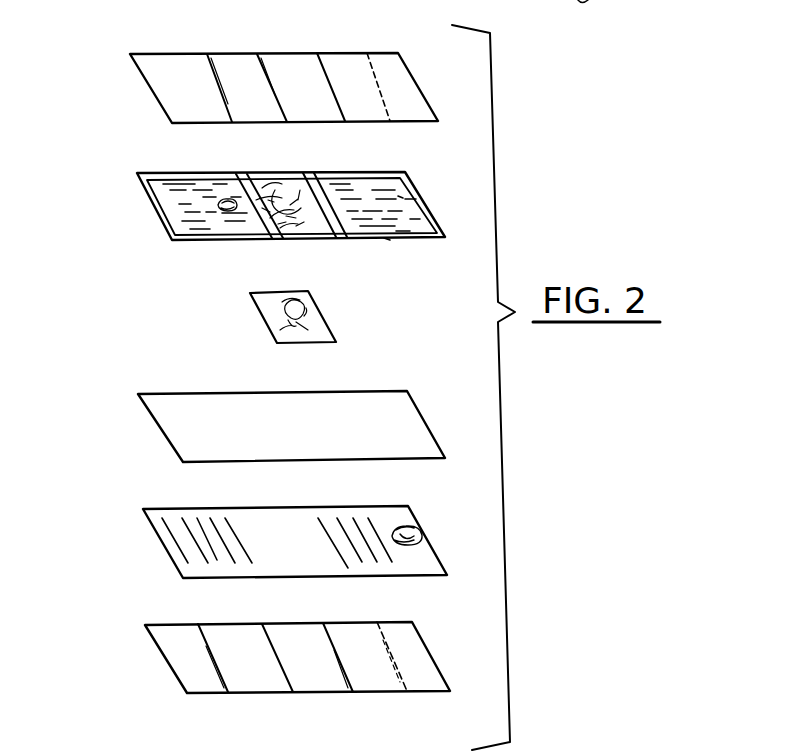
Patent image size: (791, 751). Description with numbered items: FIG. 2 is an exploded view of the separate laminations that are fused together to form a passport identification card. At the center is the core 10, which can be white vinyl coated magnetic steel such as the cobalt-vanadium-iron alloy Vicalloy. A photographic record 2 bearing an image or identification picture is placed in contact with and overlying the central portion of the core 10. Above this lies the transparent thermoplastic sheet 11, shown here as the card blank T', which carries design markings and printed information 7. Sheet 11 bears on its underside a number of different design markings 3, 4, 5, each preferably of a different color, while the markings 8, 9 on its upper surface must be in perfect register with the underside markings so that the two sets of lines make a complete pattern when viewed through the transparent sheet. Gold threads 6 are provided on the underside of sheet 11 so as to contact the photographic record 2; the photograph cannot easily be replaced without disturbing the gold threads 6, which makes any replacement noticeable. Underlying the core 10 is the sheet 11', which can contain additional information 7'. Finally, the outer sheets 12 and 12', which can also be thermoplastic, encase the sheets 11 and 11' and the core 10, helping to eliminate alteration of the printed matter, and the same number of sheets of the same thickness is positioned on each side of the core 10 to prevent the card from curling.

The photographic record 2 is at (325, 329).
The design marking 3 is at (222, 203).
The design marking 4 is at (266, 186).
The design marking 5 is at (283, 187).
The gold threads 6 is at (266, 230).
The printed text 7 is at (281, 185).
The additional information 7' is at (426, 518).
The marking 8 is at (387, 240).
The marking 9 is at (400, 197).
The core 10 is at (210, 398).
The transparent thermoplastic sheet 11 is at (278, 215).
The sheet 11' is at (265, 542).
The sheet 12 is at (257, 88).
The sheet 12' is at (262, 657).
The identification card blank T' is at (262, 206).